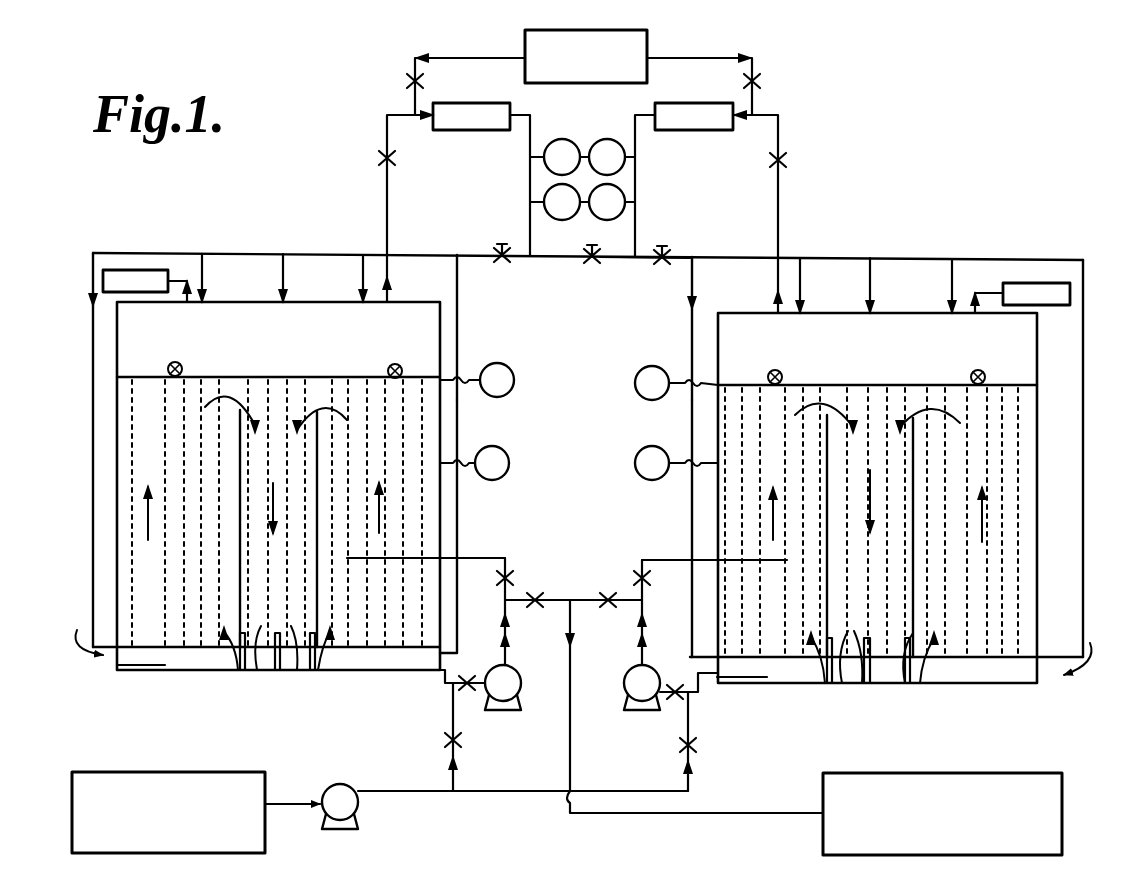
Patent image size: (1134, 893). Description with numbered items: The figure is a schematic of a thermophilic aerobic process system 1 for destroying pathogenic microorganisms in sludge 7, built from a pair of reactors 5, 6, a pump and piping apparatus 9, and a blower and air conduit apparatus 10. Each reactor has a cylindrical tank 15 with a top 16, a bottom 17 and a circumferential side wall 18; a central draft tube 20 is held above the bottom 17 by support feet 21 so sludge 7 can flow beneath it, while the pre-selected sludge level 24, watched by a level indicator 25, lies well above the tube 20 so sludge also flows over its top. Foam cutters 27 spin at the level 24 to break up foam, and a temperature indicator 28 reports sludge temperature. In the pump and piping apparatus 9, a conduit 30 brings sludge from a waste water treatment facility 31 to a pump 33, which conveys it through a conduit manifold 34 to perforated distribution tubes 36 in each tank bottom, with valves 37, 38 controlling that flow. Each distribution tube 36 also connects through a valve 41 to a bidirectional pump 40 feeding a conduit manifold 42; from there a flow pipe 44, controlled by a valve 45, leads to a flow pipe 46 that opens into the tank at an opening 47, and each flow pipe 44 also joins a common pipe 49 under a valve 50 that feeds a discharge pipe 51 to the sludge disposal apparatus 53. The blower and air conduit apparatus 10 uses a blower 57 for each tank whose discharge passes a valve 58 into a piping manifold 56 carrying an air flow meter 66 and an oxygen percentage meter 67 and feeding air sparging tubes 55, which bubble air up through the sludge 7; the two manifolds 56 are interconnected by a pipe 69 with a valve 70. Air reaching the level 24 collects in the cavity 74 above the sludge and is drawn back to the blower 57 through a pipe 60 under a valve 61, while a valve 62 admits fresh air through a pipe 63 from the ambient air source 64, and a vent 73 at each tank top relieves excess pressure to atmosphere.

The thermophilic aerobic process system 1 is at (940, 164).
The reactor 5 is at (440, 432).
The reactor 6 is at (1037, 432).
The sludge 7 is at (297, 467).
The pump and piping apparatus 9 is at (788, 738).
The blower and air conduit apparatus 10 is at (816, 128).
The cylindrical tank 15 is at (93, 429).
The tank top 16 is at (306, 302).
The tank bottom 17 is at (201, 666).
The circumferential side wall 18 is at (440, 516).
The draft tube 20 is at (318, 475).
The support feet 21 is at (302, 676).
The sludge level 24 is at (332, 377).
The level indicator 25 is at (514, 380).
The foam cutter 27 is at (195, 340).
The temperature indicator 28 is at (507, 456).
The conduit 30 is at (294, 803).
The waste water treatment facility 31 is at (160, 772).
The pump 33 is at (345, 784).
The conduit manifold 34 is at (410, 791).
The distribution tube 36 is at (367, 670).
The valve 37 is at (467, 742).
The valve 38 is at (702, 744).
The bidirectional pump 40 is at (518, 664).
The valve 41 is at (468, 677).
The conduit manifold 42 is at (555, 600).
The flow pipe 44 is at (505, 626).
The valve 45 is at (512, 576).
The flow pipe 46 is at (473, 562).
The opening 47 is at (347, 558).
The common pipe 49 is at (515, 606).
The valve 50 is at (535, 596).
The discharge pipe 51 is at (570, 756).
The sludge disposal apparatus 53 is at (916, 772).
The air sparging tube 55 is at (160, 650).
The piping manifold 56 is at (255, 253).
The blower 57 is at (490, 131).
The valve 58 is at (505, 262).
The pipe 60 is at (388, 140).
The valve 61 is at (379, 158).
The valve 62 is at (406, 81).
The pipe 63 is at (490, 58).
The ambient air 64 is at (590, 30).
The air flow meter 66 is at (596, 140).
The oxygen percentage meter 67 is at (590, 218).
The pipe 69 is at (638, 262).
The valve 70 is at (592, 264).
The vent 73 is at (138, 270).
The cavity 74 is at (440, 347).